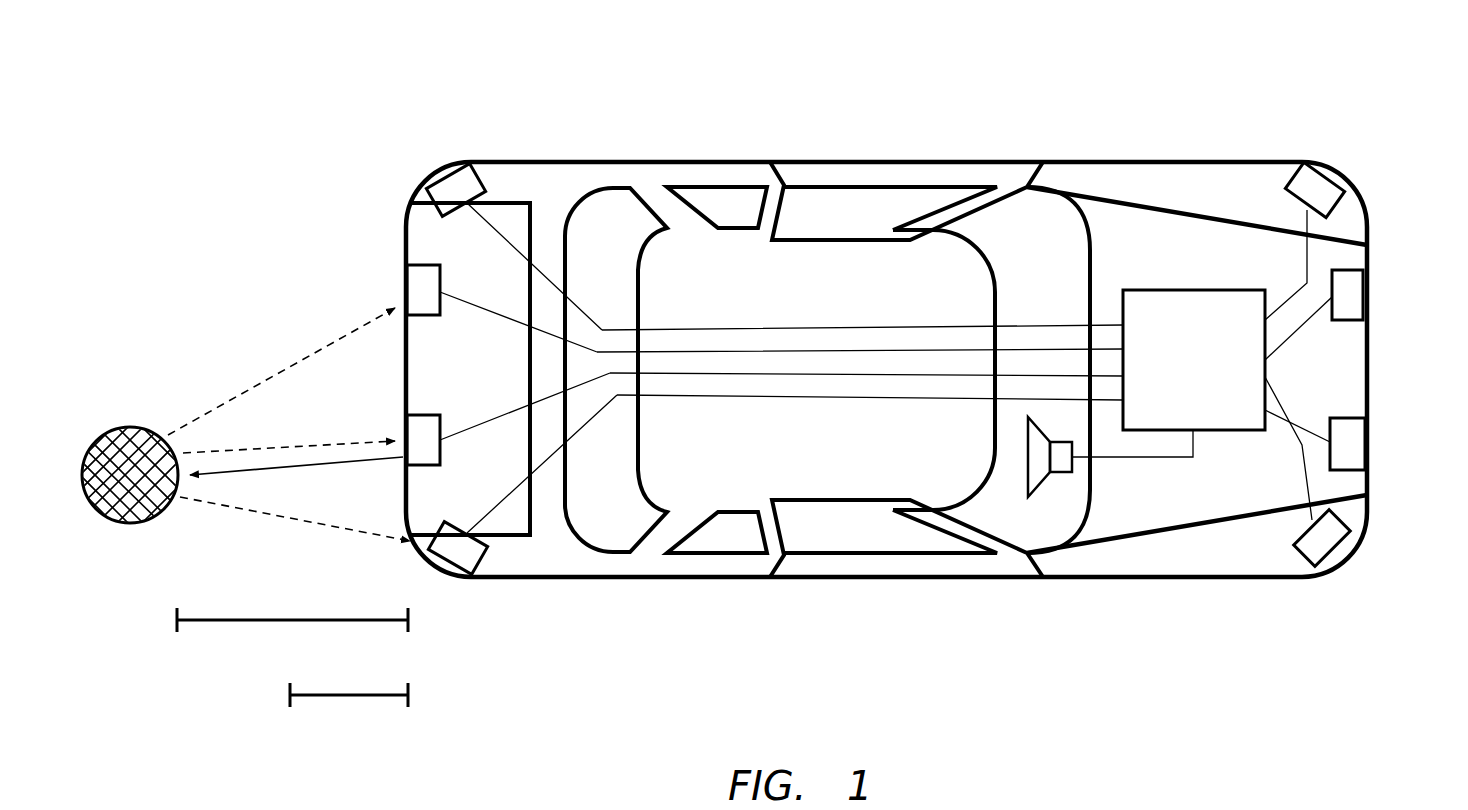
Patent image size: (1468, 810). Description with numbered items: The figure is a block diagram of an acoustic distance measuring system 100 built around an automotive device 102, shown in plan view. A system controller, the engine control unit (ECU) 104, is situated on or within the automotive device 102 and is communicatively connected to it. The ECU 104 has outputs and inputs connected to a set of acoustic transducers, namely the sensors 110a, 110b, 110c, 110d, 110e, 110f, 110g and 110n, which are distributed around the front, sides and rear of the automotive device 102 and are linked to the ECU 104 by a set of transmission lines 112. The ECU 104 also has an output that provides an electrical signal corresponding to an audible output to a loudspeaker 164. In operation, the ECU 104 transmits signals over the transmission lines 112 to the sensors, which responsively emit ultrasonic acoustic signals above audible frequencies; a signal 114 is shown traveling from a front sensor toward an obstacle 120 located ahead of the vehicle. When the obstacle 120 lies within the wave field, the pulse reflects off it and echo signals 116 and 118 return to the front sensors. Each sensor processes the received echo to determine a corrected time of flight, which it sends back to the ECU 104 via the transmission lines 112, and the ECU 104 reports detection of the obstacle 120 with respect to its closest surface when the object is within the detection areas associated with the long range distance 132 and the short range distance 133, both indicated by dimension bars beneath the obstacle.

The acoustic distance measuring system 100 is at (1212, 80).
The automotive device 102 is at (557, 177).
The engine control unit (ECU) 104 is at (1216, 391).
The sensor 110a is at (460, 185).
The sensor 110b is at (407, 277).
The sensor 110c is at (417, 427).
The sensor 110d is at (458, 558).
The sensor 110e is at (1308, 188).
The sensor 110f is at (1357, 297).
The sensor 110g is at (1347, 442).
The sensor 110n is at (1333, 545).
The transmission lines 112 is at (738, 330).
The emitted signal 114 is at (267, 468).
The reflected signal 116 is at (230, 452).
The reflected signal 118 is at (225, 507).
The obstacle 120 is at (130, 437).
The long range distance 132 is at (312, 623).
The short range distance 133 is at (347, 698).
The loudspeaker 164 is at (1062, 463).